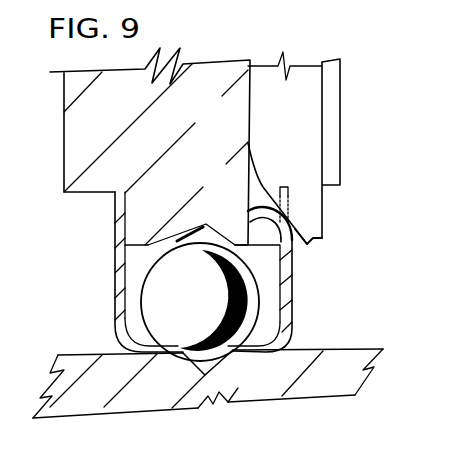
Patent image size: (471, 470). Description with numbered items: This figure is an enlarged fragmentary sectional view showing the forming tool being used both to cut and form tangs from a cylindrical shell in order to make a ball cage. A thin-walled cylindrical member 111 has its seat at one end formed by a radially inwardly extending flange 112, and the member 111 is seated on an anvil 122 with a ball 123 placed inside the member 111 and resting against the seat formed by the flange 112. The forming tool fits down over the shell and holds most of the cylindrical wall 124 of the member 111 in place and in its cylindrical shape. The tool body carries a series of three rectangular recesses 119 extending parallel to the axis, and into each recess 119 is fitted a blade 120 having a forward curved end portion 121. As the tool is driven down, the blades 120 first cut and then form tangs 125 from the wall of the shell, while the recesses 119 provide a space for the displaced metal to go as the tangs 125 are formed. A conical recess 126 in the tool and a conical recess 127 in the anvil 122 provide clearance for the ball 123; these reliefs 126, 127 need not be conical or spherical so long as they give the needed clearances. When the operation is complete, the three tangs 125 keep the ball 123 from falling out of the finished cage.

The thin-walled cylindrical member 111 is at (117, 279).
The radially inwardly extending flange 112 is at (128, 331).
The rectangular recess 119 is at (246, 114).
The blade 120 is at (315, 199).
The forward curved end portion 121 is at (303, 246).
The anvil 122 is at (322, 360).
The ball 123 is at (205, 306).
The cylindrical wall 124 is at (125, 252).
The tang 125 is at (246, 200).
The conical recess 126 is at (198, 230).
The conical recess 127 is at (218, 364).